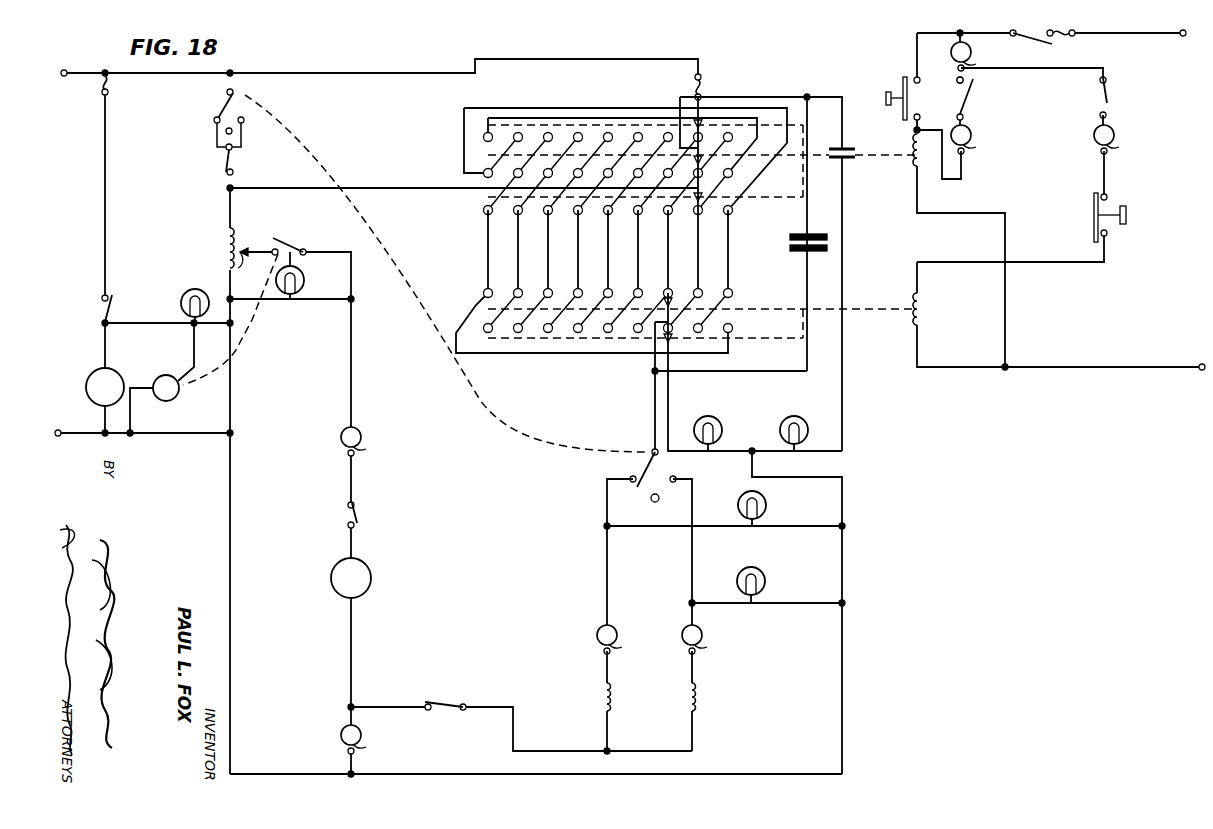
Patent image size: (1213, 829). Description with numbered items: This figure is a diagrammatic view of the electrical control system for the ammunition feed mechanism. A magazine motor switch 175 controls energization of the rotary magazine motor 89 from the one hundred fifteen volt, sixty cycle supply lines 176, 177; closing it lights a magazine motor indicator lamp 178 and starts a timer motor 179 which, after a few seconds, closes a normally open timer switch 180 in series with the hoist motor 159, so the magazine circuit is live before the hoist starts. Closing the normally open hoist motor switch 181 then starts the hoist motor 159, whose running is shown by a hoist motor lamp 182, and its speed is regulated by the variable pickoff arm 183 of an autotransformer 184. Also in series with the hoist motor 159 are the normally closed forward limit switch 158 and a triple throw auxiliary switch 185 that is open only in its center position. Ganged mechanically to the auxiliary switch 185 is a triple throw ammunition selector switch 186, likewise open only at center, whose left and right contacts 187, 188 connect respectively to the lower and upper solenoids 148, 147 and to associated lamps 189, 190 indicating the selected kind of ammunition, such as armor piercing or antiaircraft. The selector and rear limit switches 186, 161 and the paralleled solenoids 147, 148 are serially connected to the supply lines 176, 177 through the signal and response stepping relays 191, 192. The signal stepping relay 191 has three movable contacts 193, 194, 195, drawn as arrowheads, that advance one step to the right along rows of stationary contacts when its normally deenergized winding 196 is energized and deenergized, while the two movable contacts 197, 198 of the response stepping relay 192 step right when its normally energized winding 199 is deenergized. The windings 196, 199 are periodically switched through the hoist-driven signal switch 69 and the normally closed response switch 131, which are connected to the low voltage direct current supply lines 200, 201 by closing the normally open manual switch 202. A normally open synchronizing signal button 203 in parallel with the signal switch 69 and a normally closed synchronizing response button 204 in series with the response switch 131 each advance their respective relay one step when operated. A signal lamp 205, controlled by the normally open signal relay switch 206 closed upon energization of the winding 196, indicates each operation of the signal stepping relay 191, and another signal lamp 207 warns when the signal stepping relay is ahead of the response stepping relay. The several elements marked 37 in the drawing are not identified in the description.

The supply line 176 is at (64, 76).
The triple throw auxiliary switch 185 is at (226, 96).
The hoist motor switch 181 is at (223, 152).
The autotransformer 184 is at (228, 243).
The variable pickoff arm 183 is at (237, 263).
The timer switch 180 is at (297, 238).
The hoist motor lamp 182 is at (301, 290).
The magazine motor switch 175 is at (108, 311).
The magazine motor indicator lamp 178 is at (181, 302).
The rotary magazine motor 89 is at (139, 368).
The supply line 177 is at (58, 430).
The timer motor 179 is at (179, 390).
The fuse 37 is at (358, 430).
The forward limit switch 158 is at (418, 528).
The hoist motor 159 is at (370, 586).
The rear limit switch 161 is at (478, 691).
The signal stepping relay 191 is at (482, 158).
The movable contact 193 is at (692, 124).
The movable contact 194 is at (702, 163).
The movable contact 195 is at (702, 201).
The response stepping relay 192 is at (471, 304).
The movable contact 197 is at (672, 303).
The movable contact 198 is at (672, 341).
The signal relay switch 206 is at (847, 147).
The ammunition selector switch 186 is at (650, 450).
The left contact 187 is at (630, 483).
The right contact 188 is at (676, 482).
The lower solenoid 148 is at (604, 696).
The upper solenoid 147 is at (698, 696).
The lamp 189 is at (766, 506).
The lamp 190 is at (764, 576).
The signal lamp 207 is at (713, 417).
The signal lamp 205 is at (797, 417).
The synchronizing signal button 203 is at (887, 96).
The winding 196 is at (912, 162).
The winding 199 is at (912, 318).
The manual switch 202 is at (1052, 45).
The low voltage direct current supply line 200 is at (1183, 36).
The signal switch 69 is at (1022, 126).
The response switch 131 is at (1158, 128).
The synchronizing response button 204 is at (1122, 207).
The low voltage direct current supply line 201 is at (1202, 364).